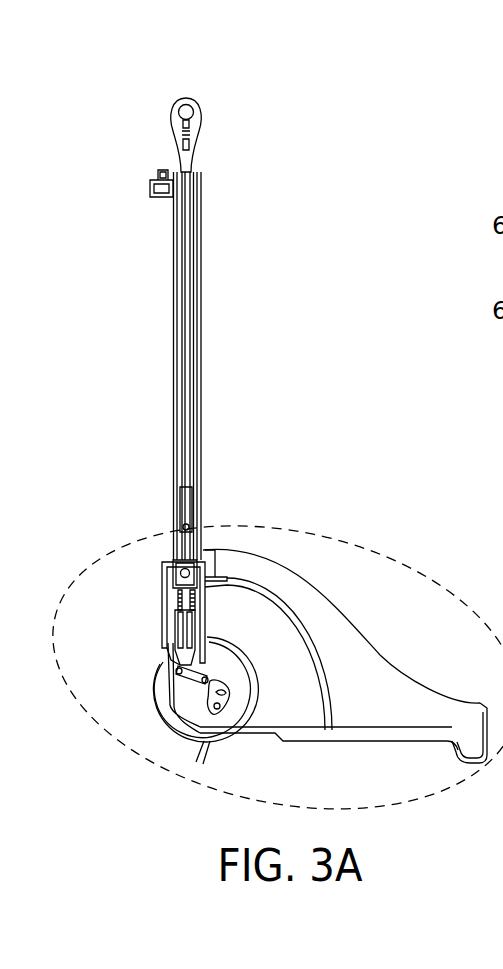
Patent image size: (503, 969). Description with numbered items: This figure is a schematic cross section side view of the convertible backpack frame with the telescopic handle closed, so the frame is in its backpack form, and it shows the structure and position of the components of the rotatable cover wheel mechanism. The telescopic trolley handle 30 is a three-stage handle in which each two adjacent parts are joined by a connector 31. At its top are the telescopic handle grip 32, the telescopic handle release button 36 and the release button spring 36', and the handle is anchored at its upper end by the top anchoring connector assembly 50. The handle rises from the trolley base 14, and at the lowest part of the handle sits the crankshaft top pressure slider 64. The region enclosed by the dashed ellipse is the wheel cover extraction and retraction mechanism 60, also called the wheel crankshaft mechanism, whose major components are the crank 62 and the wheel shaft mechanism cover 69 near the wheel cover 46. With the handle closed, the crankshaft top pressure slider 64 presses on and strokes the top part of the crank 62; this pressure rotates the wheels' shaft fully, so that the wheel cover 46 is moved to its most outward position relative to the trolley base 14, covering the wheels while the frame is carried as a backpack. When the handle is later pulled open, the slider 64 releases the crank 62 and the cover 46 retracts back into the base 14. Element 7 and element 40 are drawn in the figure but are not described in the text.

The telescopic handle grip 32 is at (199, 128).
The telescopic handle release button 36 is at (146, 84).
The release button spring 36' is at (128, 142).
The top anchoring connector assembly 50 is at (130, 205).
The telescopic trolley handle 30 is at (201, 343).
The connector 31 is at (213, 570).
The wheel cover extraction and retraction mechanism 60 is at (118, 523).
The trolley base 14 is at (325, 607).
The trough 7 is at (443, 588).
The base plate 40 is at (250, 773).
The wheel cover 46 is at (173, 723).
The crankshaft top pressure slider 64 is at (177, 670).
The crank 62 is at (175, 680).
The wheel shaft mechanism cover 69 is at (220, 685).